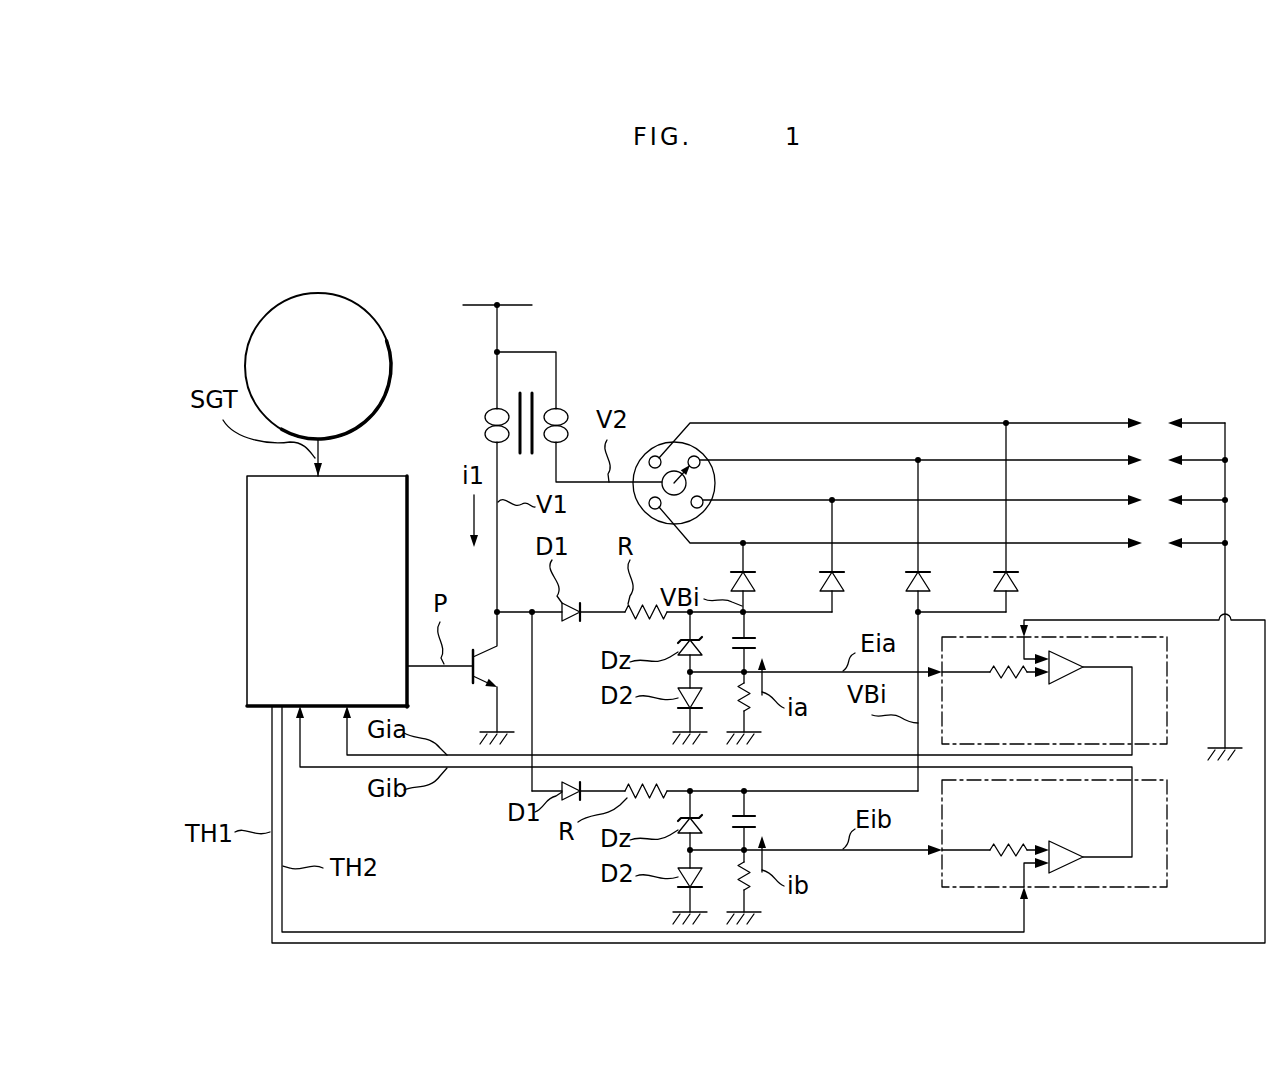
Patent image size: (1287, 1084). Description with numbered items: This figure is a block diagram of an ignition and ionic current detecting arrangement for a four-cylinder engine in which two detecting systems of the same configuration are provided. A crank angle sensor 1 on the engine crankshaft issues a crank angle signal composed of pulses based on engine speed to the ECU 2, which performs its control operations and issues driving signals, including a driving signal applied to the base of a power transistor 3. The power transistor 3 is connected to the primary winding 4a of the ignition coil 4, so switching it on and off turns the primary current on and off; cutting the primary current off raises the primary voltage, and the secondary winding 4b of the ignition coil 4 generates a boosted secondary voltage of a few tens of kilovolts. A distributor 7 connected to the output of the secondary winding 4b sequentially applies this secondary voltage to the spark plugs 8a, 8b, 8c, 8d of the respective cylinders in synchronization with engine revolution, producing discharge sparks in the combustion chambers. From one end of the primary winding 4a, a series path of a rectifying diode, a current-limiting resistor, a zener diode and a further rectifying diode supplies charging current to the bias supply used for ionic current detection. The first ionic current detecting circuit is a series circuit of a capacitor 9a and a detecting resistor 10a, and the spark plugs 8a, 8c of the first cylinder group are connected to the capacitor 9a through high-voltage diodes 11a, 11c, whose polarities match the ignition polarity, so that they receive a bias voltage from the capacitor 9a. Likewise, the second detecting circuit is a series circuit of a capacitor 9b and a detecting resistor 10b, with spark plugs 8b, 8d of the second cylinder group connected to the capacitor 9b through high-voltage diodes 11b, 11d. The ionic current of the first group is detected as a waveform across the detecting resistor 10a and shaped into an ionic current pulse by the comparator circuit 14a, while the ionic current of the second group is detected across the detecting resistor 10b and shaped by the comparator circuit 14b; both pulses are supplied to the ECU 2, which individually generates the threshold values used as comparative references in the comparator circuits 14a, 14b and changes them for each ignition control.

The crank angle sensor 1 is at (318, 293).
The ECU 2 is at (247, 477).
The power transistor 3 is at (472, 678).
The ignition coil 4 is at (533, 445).
The primary winding 4a is at (485, 419).
The secondary winding 4b is at (569, 416).
The distributor 7 is at (669, 441).
The spark plug 8a is at (1154, 541).
The spark plug 8b is at (1154, 499).
The spark plug 8c is at (1154, 462).
The spark plug 8d is at (1154, 425).
The capacitor 9a is at (762, 641).
The capacitor 9b is at (762, 819).
The detecting resistor 10a is at (760, 706).
The detecting resistor 10b is at (760, 880).
The high-voltage diode 11a is at (731, 577).
The high-voltage diode 11b is at (818, 581).
The high-voltage diode 11c is at (906, 581).
The high-voltage diode 11d is at (995, 582).
The comparator circuit 14a is at (1138, 636).
The comparator circuit 14b is at (1167, 847).